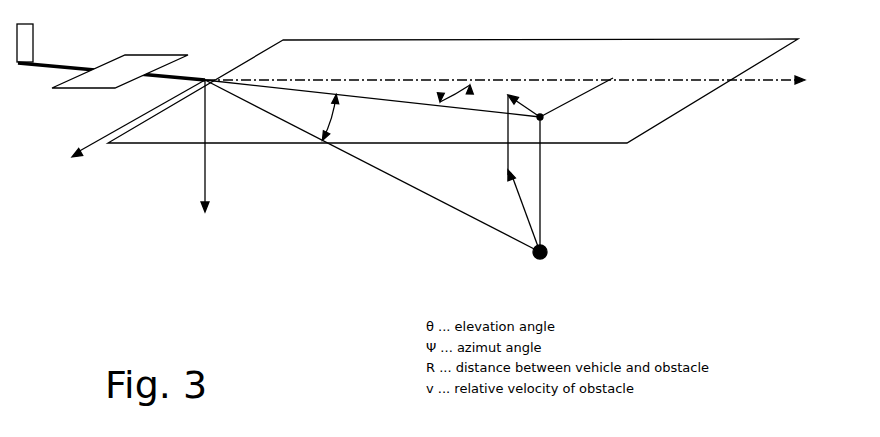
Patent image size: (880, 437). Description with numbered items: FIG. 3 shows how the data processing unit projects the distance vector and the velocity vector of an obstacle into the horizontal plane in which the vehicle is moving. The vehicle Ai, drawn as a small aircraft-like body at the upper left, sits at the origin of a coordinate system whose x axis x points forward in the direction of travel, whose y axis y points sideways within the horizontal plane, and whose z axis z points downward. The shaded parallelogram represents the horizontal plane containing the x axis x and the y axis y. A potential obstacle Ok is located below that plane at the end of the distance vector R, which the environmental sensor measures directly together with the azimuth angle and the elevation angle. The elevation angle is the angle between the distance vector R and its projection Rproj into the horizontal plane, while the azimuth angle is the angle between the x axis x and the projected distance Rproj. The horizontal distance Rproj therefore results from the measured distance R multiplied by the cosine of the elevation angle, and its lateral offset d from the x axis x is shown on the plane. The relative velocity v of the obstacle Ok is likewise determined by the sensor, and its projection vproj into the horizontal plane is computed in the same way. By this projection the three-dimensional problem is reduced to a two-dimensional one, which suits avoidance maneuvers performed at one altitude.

The vehicle Ai is at (111, 56).
The obstacle Ok is at (592, 189).
The x axis x is at (512, 88).
The y axis y is at (133, 127).
The z axis z is at (204, 157).
The distance between vehicle and obstacle R is at (372, 166).
The horizontal distance Rproj is at (374, 107).
The relative velocity of obstacle v is at (523, 211).
The horizontal velocity vproj is at (527, 124).
The lateral offset d is at (576, 97).